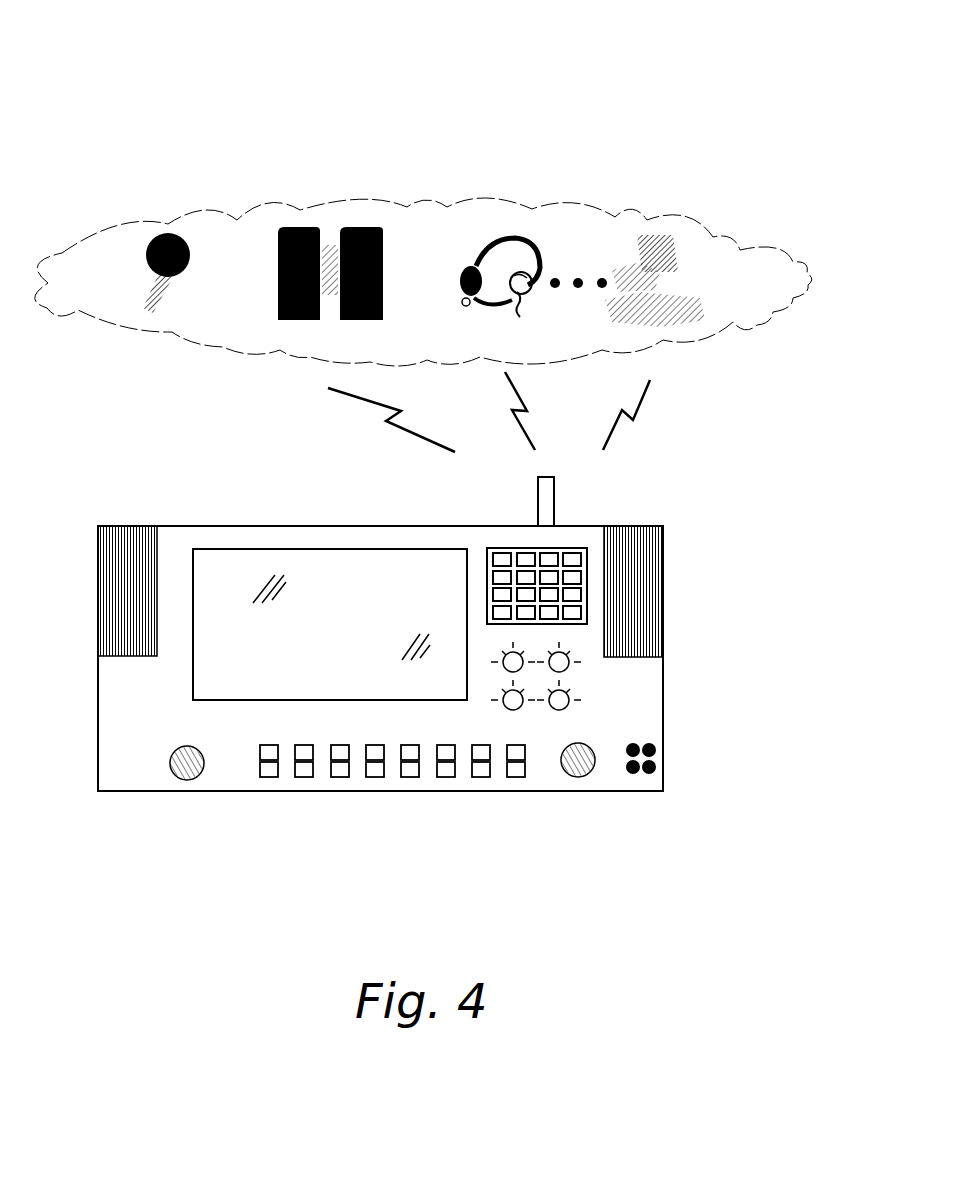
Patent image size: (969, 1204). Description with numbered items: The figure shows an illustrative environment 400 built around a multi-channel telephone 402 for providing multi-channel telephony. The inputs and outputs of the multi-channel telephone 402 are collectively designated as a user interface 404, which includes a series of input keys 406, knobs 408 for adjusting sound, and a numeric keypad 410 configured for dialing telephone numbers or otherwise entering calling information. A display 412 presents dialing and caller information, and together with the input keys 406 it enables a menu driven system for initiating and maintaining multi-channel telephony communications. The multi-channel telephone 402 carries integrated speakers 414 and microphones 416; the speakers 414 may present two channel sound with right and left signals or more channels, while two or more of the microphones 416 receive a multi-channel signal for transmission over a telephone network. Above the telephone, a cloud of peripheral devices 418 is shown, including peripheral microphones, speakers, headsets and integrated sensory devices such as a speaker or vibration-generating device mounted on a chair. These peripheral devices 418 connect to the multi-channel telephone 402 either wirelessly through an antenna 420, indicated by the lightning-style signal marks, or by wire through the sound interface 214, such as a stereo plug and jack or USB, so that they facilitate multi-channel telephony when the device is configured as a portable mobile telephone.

The environment 400 is at (142, 78).
The multi-channel telephone 402 is at (178, 526).
The user interface 404 is at (288, 495).
The input keys 406 is at (542, 742).
The knobs 408 is at (592, 696).
The numeric keypad 410 is at (484, 535).
The display 412 is at (192, 672).
The speakers 414 is at (98, 585).
The microphones 416 is at (187, 780).
The peripheral devices 418 is at (103, 243).
The antenna 420 is at (554, 500).
The sound interface 214 is at (656, 762).